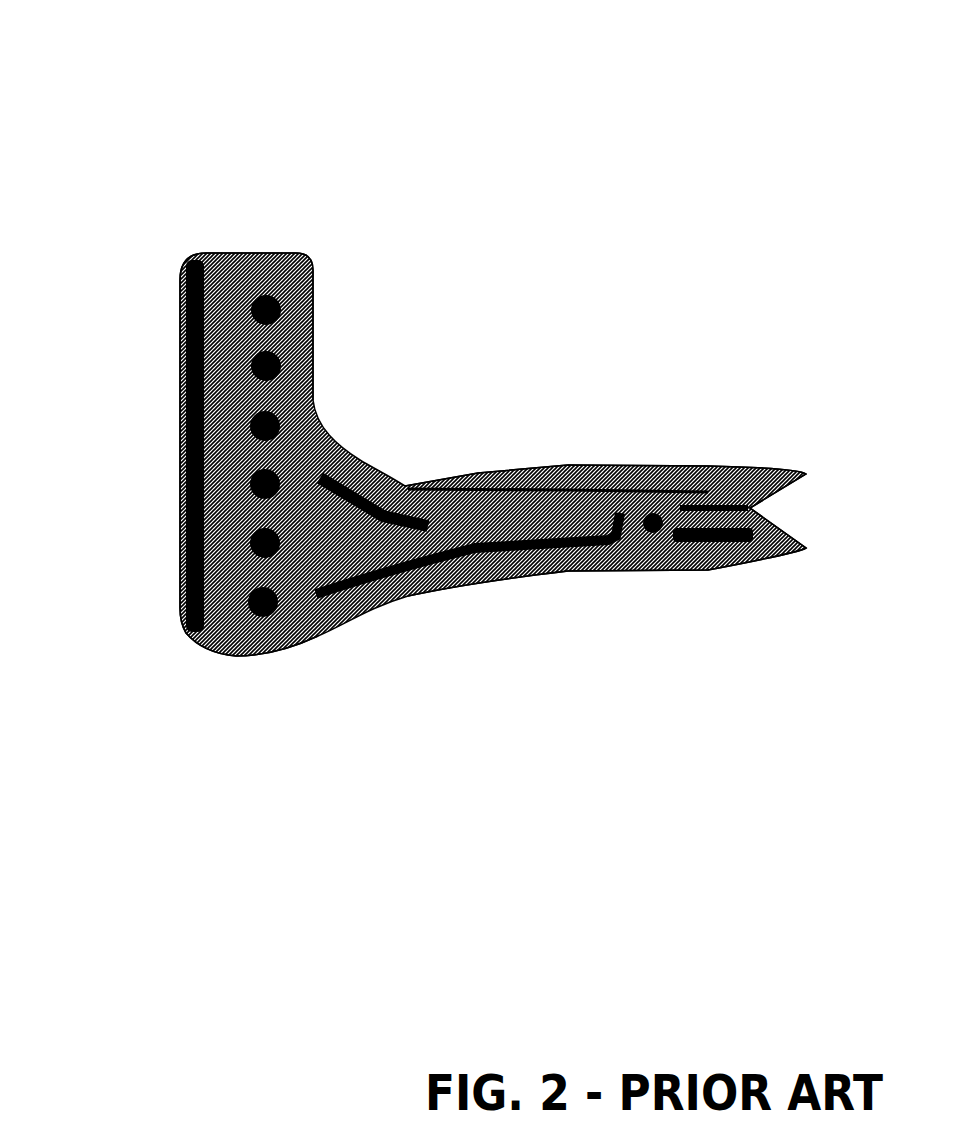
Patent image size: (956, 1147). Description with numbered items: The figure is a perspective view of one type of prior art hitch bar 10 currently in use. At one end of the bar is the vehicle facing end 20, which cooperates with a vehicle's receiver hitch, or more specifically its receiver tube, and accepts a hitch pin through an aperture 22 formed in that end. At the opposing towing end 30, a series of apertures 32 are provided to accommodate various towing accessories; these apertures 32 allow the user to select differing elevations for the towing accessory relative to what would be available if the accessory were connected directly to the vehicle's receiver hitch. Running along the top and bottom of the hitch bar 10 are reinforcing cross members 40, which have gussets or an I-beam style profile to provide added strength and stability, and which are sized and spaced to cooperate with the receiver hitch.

The hitch bar 10 is at (457, 369).
The vehicle facing end 20 is at (750, 457).
The aperture 22 is at (645, 520).
The towing end 30 is at (175, 395).
The apertures 32 is at (250, 540).
The reinforcing cross members 40 is at (480, 560).